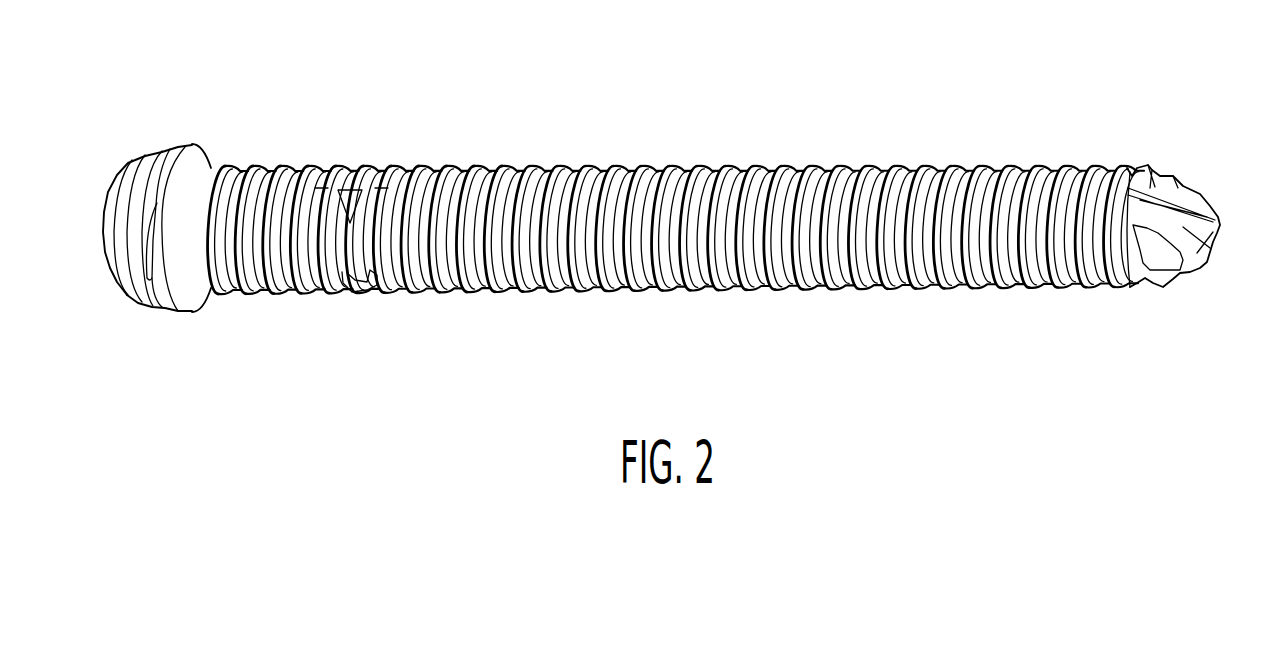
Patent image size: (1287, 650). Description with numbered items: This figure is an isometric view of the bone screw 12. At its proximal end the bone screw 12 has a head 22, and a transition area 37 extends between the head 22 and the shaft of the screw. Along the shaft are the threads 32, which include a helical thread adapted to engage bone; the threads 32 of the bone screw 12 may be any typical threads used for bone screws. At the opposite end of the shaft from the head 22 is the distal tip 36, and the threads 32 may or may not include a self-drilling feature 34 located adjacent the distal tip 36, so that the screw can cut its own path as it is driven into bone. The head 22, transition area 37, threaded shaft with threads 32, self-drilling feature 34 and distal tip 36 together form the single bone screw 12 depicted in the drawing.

The bone screw 12 is at (707, 166).
The head 22 is at (192, 144).
The transition area 37 is at (194, 297).
The threads 32 is at (538, 254).
The self-drilling feature 34 is at (1213, 256).
The distal tip 36 is at (1213, 207).